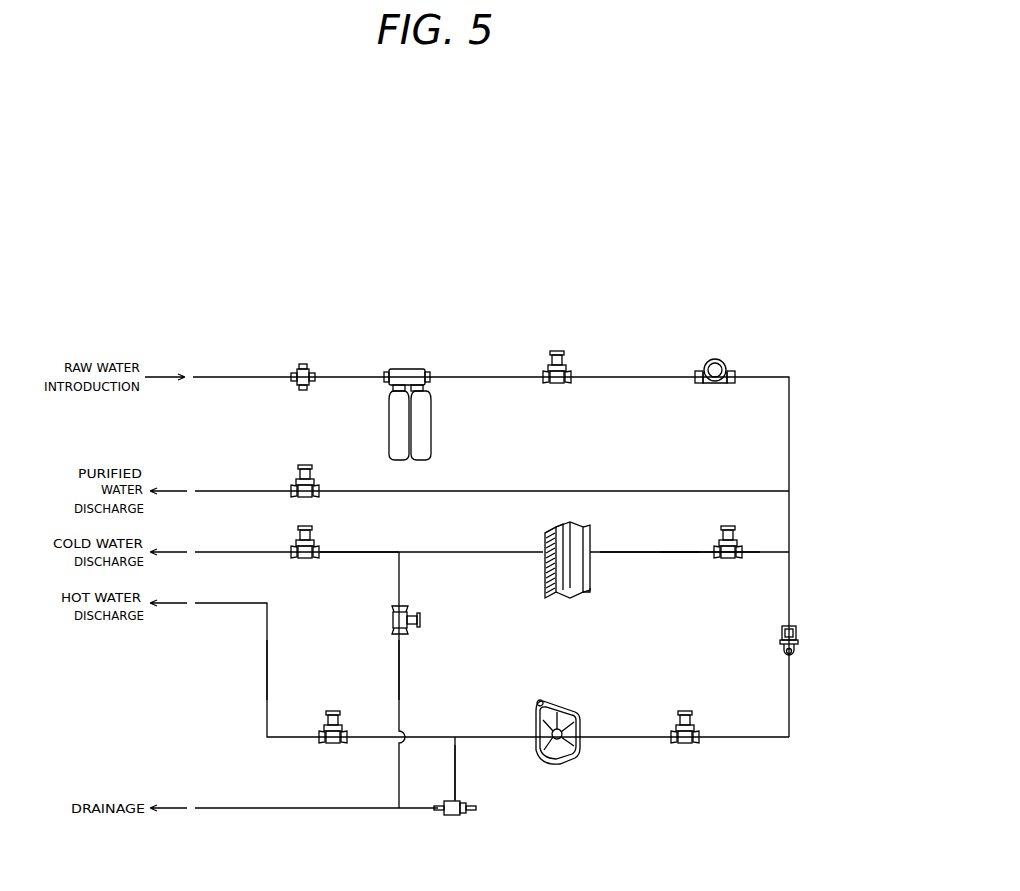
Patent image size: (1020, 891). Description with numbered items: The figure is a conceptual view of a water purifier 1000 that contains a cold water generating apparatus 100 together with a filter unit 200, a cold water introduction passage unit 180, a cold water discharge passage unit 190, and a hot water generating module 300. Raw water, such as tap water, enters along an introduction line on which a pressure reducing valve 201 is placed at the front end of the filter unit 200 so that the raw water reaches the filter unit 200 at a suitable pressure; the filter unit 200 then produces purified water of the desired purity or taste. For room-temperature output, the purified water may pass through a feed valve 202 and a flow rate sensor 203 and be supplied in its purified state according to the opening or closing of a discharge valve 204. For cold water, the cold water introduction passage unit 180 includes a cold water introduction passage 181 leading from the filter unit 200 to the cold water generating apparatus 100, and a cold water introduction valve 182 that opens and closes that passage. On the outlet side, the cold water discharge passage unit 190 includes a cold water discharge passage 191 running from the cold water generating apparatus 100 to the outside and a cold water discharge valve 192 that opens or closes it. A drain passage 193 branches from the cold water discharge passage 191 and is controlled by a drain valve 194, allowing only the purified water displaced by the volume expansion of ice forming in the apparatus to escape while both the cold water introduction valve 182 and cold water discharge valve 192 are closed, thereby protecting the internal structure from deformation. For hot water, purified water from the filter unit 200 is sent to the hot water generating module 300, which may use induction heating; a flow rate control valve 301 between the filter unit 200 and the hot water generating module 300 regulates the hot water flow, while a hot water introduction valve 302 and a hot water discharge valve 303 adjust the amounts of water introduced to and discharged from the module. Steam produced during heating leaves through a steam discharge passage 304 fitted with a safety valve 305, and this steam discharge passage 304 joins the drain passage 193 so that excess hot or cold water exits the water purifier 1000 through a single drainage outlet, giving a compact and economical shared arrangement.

The water purifier 1000 is at (232, 288).
The cold water generating apparatus 100 is at (588, 534).
The cold water introduction passage unit 180 is at (658, 614).
The cold water introduction passage 181 is at (678, 553).
The cold water introduction valve 182 is at (723, 559).
The cold water discharge passage unit 190 is at (195, 612).
The cold water discharge passage 191 is at (363, 554).
The cold water discharge valve 192 is at (303, 561).
The drain passage 193 is at (397, 665).
The drain valve 194 is at (392, 620).
The filter unit 200 is at (415, 366).
The pressure reducing valve 201 is at (308, 367).
The feed valve 202 is at (558, 346).
The flow rate sensor 203 is at (719, 357).
The discharge valve 204 is at (320, 482).
The hot water generating module 300 is at (553, 762).
The flow rate control valve 301 is at (780, 641).
The hot water introduction valve 302 is at (683, 748).
The hot water discharge valve 303 is at (333, 748).
The steam discharge passage 304 is at (456, 774).
The safety valve 305 is at (450, 822).